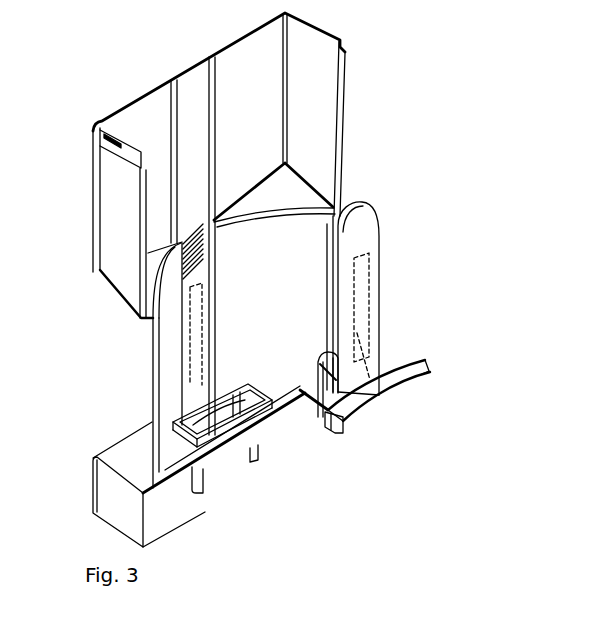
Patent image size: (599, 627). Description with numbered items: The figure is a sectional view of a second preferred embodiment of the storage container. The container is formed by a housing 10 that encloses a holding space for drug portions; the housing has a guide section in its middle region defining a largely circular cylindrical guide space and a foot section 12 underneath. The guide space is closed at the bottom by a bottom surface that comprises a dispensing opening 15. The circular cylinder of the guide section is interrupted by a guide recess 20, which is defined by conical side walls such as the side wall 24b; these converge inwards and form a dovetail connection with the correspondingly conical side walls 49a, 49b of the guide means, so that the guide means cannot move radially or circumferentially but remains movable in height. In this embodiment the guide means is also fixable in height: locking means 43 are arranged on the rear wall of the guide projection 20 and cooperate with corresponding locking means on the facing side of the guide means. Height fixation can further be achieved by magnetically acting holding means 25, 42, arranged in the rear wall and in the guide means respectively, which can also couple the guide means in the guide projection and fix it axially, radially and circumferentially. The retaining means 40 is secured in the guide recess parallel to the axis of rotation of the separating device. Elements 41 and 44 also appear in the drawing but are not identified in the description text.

The housing 10 is at (122, 205).
The foot section 12 is at (119, 507).
The dispensing opening 15 is at (217, 435).
The guide recess 20 is at (268, 423).
The side wall 24b is at (222, 307).
The magnetically acting holding means 25 is at (193, 495).
The retaining means 40 is at (391, 165).
The curved arm 41 is at (408, 372).
The magnetically acting holding means 42 is at (353, 322).
The locking means 43 is at (178, 243).
The panel 44 is at (356, 222).
The side wall 49a is at (317, 380).
The side wall 49b is at (380, 252).